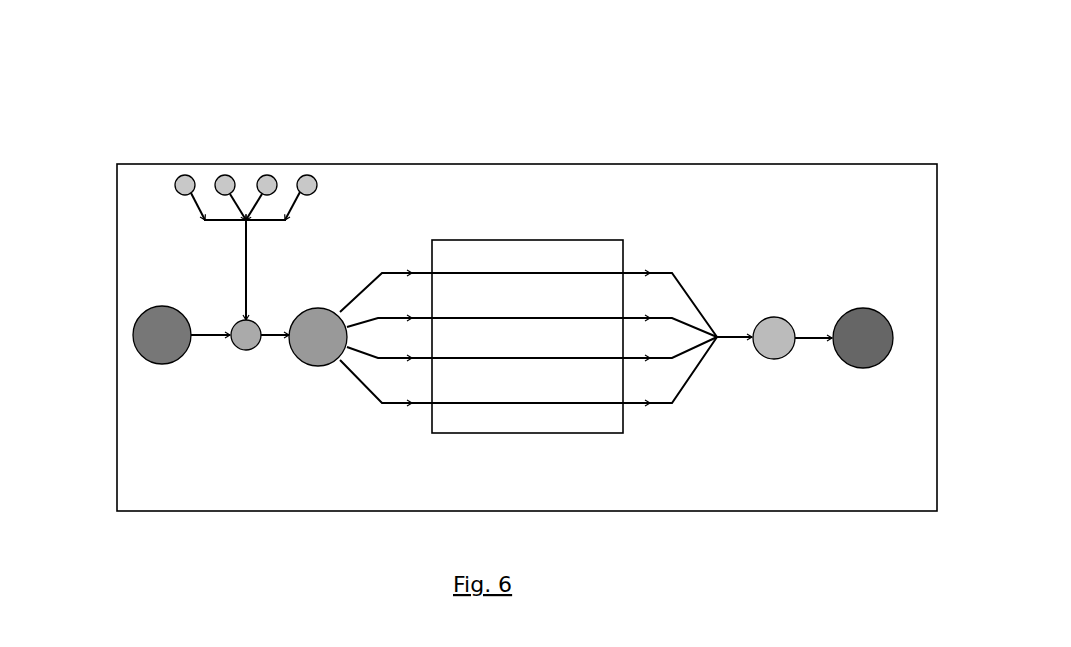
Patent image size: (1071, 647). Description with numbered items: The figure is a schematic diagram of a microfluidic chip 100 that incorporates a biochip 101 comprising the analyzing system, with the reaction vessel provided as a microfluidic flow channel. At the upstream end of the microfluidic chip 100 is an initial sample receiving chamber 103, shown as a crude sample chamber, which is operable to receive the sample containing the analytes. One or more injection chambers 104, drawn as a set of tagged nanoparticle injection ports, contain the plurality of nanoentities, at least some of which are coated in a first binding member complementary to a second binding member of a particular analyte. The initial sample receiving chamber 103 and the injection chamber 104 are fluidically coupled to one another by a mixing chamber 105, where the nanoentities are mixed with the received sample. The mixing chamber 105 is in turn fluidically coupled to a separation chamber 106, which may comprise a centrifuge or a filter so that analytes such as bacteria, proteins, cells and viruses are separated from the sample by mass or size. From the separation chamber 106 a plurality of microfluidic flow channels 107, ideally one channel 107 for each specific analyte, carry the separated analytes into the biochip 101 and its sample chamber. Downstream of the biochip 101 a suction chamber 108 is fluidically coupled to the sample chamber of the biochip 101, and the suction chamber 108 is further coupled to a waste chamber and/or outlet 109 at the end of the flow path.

The microfluidic chip 100 is at (527, 261).
The biochip 101 is at (477, 240).
The initial sample receiving chamber 103 is at (133, 326).
The injection chamber 104 is at (314, 180).
The mixing chamber 105 is at (236, 345).
The separation chamber 106 is at (303, 363).
The microfluidic flow channels 107 is at (398, 410).
The suction chamber 108 is at (775, 359).
The waste chamber and/or outlet 109 is at (853, 308).